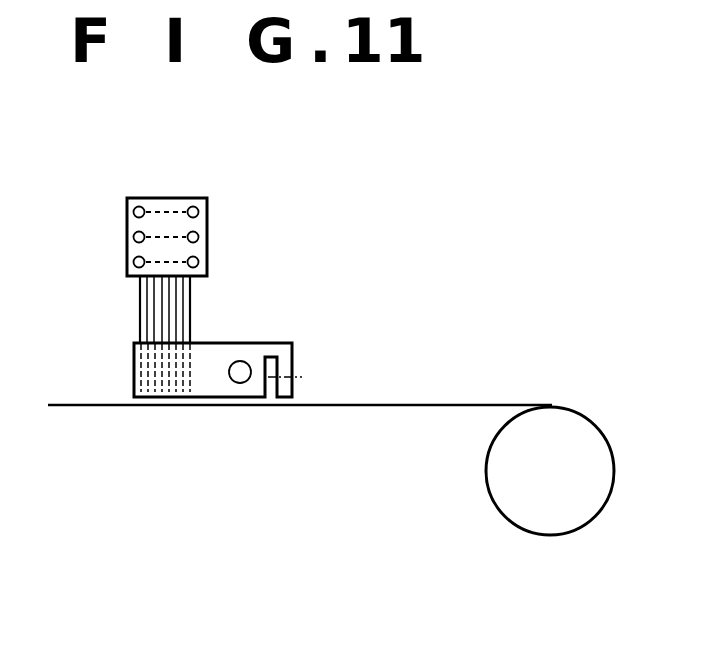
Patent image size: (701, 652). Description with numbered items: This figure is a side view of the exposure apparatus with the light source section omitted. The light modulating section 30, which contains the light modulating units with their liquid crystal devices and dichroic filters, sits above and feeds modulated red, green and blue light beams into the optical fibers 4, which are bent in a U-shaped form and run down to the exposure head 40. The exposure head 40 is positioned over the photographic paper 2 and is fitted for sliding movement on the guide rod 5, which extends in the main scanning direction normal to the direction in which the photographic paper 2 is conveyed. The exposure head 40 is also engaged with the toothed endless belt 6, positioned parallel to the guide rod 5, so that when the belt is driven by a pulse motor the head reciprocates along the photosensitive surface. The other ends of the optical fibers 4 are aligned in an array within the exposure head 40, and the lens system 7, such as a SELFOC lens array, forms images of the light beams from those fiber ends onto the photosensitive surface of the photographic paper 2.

The photographic paper 2 is at (383, 407).
The optical fiber 4 is at (142, 308).
The guide rod 5 is at (242, 397).
The toothed endless belt 6 is at (282, 397).
The lens system 7 is at (158, 403).
The light modulating section 30 is at (201, 222).
The exposure head 40 is at (218, 353).